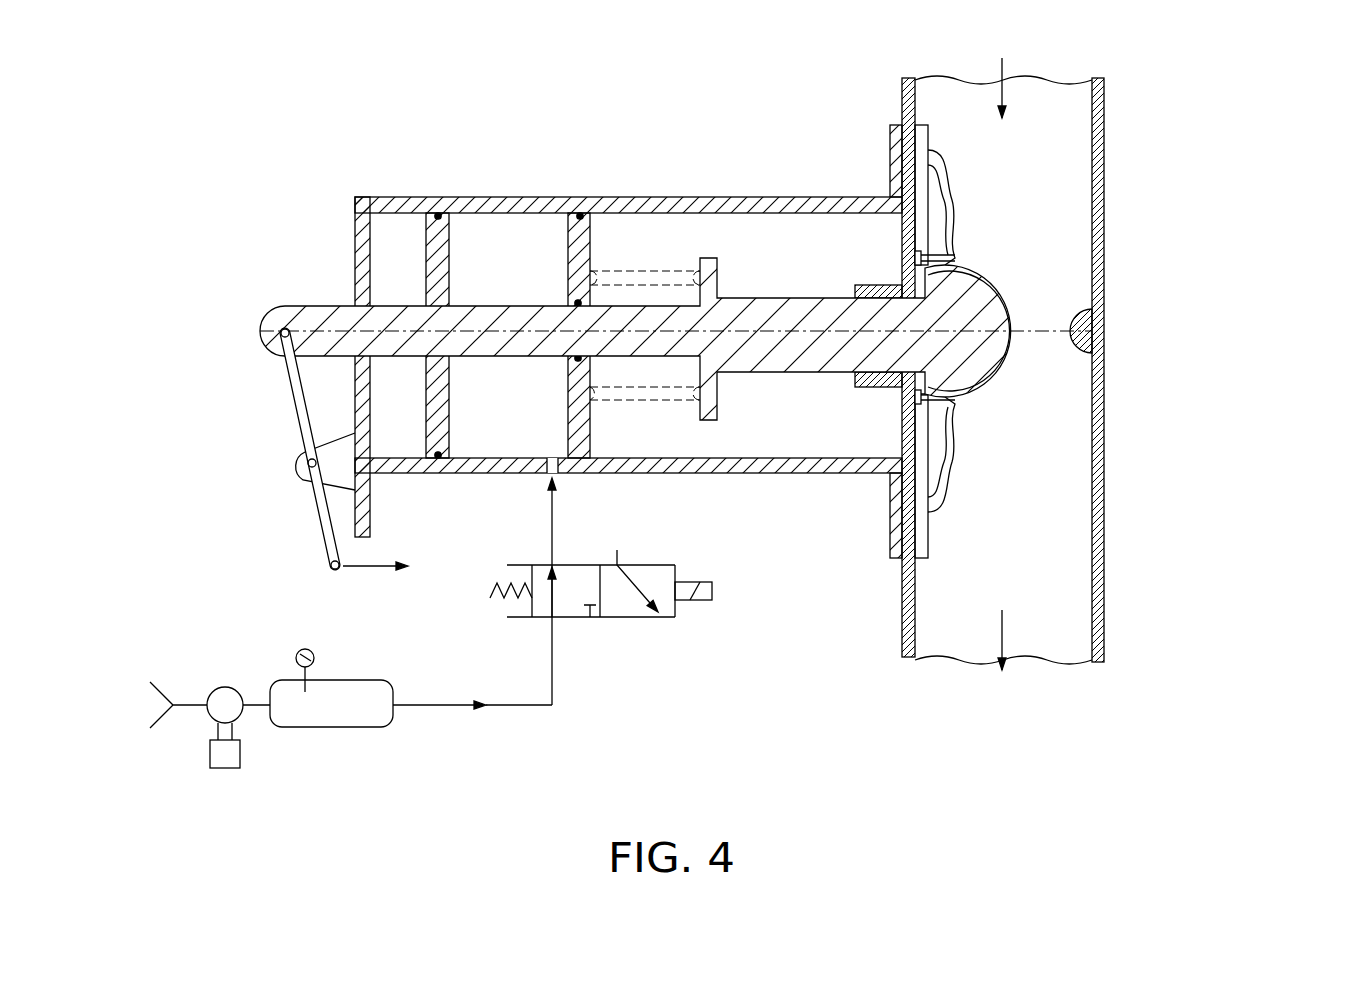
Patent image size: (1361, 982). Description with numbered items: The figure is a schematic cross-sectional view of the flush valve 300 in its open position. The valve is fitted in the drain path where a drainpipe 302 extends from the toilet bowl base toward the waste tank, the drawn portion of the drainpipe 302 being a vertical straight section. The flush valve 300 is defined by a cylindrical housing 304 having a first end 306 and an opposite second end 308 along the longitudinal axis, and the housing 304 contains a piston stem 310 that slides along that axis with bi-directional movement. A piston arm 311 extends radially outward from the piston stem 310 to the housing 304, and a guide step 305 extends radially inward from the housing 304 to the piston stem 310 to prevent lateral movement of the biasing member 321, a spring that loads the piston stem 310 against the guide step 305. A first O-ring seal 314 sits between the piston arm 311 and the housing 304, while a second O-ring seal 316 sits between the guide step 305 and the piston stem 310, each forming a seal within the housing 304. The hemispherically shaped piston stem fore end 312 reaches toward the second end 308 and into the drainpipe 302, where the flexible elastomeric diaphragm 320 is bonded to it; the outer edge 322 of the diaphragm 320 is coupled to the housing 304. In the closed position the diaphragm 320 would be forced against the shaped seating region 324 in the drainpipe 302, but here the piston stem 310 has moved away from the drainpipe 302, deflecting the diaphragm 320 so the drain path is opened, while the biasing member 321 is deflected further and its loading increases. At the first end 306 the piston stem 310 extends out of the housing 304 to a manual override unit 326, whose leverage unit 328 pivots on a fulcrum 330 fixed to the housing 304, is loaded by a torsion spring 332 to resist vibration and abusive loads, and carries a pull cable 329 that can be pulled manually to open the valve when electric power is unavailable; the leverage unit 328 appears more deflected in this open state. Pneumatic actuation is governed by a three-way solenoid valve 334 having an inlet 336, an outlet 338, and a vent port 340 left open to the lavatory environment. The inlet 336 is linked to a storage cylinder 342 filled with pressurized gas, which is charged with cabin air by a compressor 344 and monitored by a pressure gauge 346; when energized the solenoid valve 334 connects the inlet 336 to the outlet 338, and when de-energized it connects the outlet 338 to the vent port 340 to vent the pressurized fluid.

The flush valve 300 is at (1233, 124).
The drainpipe 302 is at (1105, 543).
The housing 304 is at (607, 198).
The guide step 305 is at (578, 228).
The first end 306 is at (278, 203).
The second end 308 is at (1145, 261).
The piston stem 310 is at (665, 312).
The piston arm 311 is at (430, 277).
The piston stem fore end 312 is at (1013, 328).
The first O-ring seal 314 is at (432, 202).
The second O-ring seal 316 is at (578, 300).
The diaphragm 320 is at (977, 390).
The biasing member 321 is at (665, 405).
The outer edge 322 is at (913, 145).
The shaped seating region 324 is at (1087, 343).
The manual override unit 326 is at (210, 362).
The leverage unit 328 is at (305, 428).
The pull cable 329 is at (343, 570).
The fulcrum 330 is at (308, 463).
The torsion spring 332 is at (292, 455).
The three-way solenoid valve 334 is at (637, 607).
The inlet 336 is at (533, 629).
The outlet 338 is at (538, 549).
The vent port 340 is at (612, 630).
The storage cylinder 342 is at (360, 710).
The compressor 344 is at (214, 693).
The pressure gauge 346 is at (296, 650).